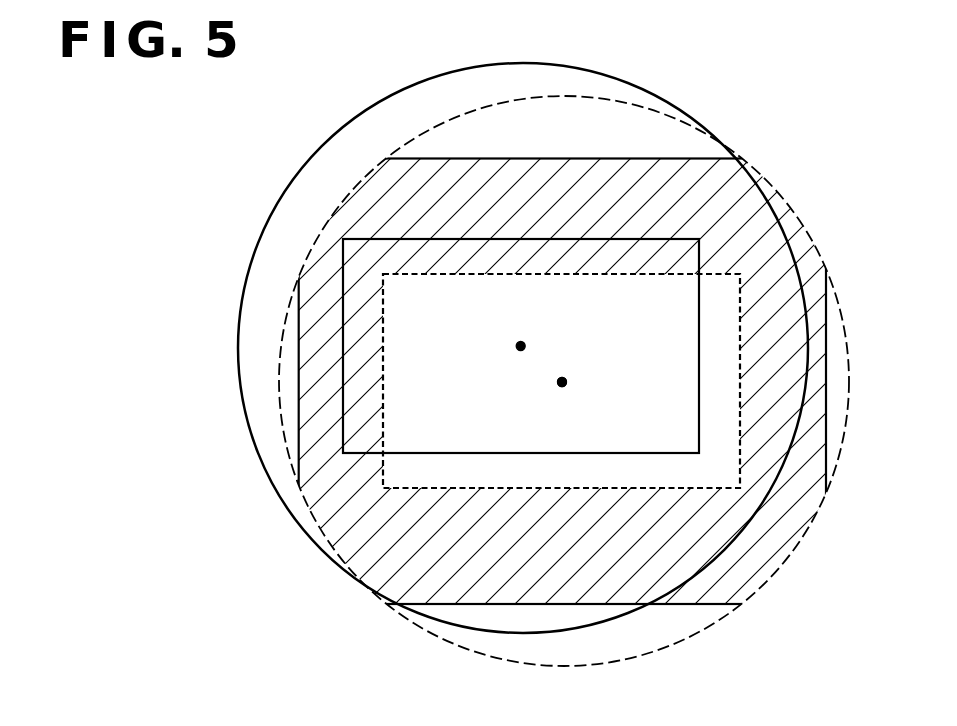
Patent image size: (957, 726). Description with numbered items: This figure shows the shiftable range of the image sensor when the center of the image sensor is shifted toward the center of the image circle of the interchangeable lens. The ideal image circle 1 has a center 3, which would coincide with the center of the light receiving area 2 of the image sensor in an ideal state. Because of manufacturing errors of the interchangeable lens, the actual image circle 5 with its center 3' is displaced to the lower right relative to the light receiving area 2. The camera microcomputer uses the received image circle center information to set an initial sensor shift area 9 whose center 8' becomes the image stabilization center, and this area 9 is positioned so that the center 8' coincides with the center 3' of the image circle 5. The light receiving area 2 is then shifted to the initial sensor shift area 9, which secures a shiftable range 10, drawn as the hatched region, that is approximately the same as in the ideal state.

The image circle 1 is at (400, 87).
The light receiving area 2 is at (555, 238).
The center of the image circle 3 is at (494, 330).
The center of the image circle 3' is at (587, 349).
The center of the initial sensor shift area 8' is at (562, 382).
The image circle 5 is at (777, 193).
The initial sensor shift area 9 is at (547, 488).
The shiftable range 10 is at (667, 158).